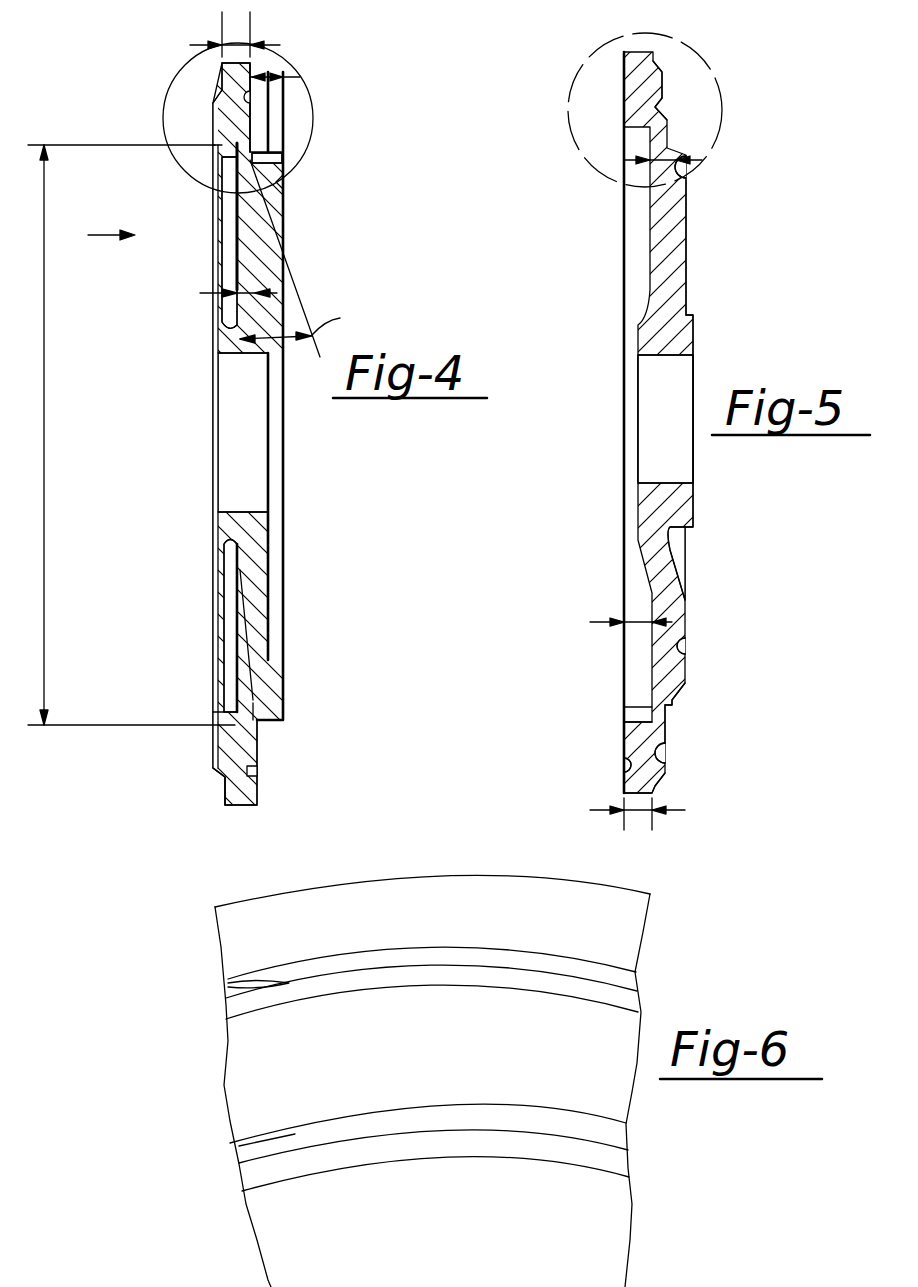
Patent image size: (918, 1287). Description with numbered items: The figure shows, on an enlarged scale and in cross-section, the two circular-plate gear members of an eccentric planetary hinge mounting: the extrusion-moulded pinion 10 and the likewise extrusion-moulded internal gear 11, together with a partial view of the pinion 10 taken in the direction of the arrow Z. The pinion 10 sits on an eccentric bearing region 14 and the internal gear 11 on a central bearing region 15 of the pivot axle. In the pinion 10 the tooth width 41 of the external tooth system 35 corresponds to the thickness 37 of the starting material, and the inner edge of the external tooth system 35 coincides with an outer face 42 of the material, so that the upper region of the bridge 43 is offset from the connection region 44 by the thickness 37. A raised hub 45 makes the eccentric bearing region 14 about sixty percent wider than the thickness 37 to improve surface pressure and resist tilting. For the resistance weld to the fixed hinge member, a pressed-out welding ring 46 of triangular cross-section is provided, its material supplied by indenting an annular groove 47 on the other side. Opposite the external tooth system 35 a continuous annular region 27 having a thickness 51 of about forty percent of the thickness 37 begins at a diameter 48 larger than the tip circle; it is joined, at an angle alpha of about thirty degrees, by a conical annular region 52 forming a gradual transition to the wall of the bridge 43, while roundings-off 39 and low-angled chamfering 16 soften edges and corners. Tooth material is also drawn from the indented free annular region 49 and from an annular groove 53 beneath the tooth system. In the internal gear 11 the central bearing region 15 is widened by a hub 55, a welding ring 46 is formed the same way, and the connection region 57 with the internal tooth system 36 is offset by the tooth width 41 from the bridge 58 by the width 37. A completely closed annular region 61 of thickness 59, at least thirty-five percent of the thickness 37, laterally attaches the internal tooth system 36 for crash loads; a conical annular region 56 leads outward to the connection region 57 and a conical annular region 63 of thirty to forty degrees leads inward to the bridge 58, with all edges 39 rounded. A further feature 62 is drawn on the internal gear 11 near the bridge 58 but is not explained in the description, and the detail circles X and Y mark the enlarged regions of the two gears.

In FIG. 4, the pinion 10 is at (190, 452).
In FIG. 5, the internal gear 11 is at (705, 294).
In FIG. 4, the eccentric bearing region 14 is at (250, 512).
In FIG. 5, the central bearing region 15 is at (665, 482).
In FIG. 4, the low-angled chamfering 16 is at (237, 712).
In FIG. 4, the annular region 27 is at (230, 166).
In FIG. 6, the annular region 27 is at (239, 1146).
In FIG. 4, the external tooth system 35 is at (262, 157).
In FIG. 5, the internal tooth system 36 is at (633, 710).
In FIG. 4, the thickness of the starting material 37 is at (233, 42).
In FIG. 5, the thickness of the starting material 37 is at (648, 822).
In FIG. 4, the roundings-off 39 is at (253, 628).
In FIG. 5, the roundings-off 39 is at (684, 157).
In FIG. 4, the tooth width 41 is at (258, 98).
In FIG. 5, the tooth width 41 is at (638, 617).
In FIG. 4, the outer face 42 is at (283, 100).
In FIG. 4, the bridge 43 is at (283, 232).
In FIG. 4, the connection region 44 is at (227, 82).
In FIG. 4, the raised hub 45 is at (237, 522).
In FIG. 4, the welding ring 46 is at (228, 773).
In FIG. 5, the welding ring 46 is at (667, 762).
In FIG. 6, the welding ring 46 is at (239, 981).
In FIG. 4, the annular groove 47 is at (252, 772).
In FIG. 5, the annular groove 47 is at (625, 767).
In FIG. 4, the diameter 48 is at (128, 435).
In FIG. 4, the free annular region 49 is at (232, 150).
In FIG. 4, the thickness 51 is at (205, 293).
In FIG. 4, the conical annular region 52 is at (250, 190).
In FIG. 6, the conical annular region 52 is at (311, 1157).
In FIG. 4, the annular groove 53 is at (283, 198).
In FIG. 5, the hub 55 is at (682, 342).
In FIG. 5, the conical annular region 56 is at (668, 718).
In FIG. 5, the connection region 57 is at (637, 783).
In FIG. 5, the bridge 58 is at (668, 223).
In FIG. 5, the thickness 59 is at (684, 163).
In FIG. 5, the annular region 61 is at (667, 712).
In FIG. 5, the slot 62 is at (682, 640).
In FIG. 5, the conical annular region 63 is at (675, 150).
In FIG. 5, the detail circle X is at (638, 110).
In FIG. 4, the detail circle Y is at (238, 113).
In FIG. 4, the arrow Z is at (97, 238).
In FIG. 4, the angle α alpha is at (300, 323).